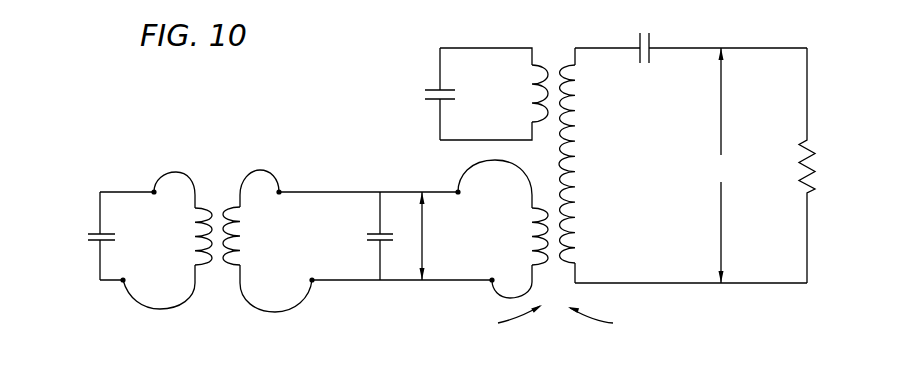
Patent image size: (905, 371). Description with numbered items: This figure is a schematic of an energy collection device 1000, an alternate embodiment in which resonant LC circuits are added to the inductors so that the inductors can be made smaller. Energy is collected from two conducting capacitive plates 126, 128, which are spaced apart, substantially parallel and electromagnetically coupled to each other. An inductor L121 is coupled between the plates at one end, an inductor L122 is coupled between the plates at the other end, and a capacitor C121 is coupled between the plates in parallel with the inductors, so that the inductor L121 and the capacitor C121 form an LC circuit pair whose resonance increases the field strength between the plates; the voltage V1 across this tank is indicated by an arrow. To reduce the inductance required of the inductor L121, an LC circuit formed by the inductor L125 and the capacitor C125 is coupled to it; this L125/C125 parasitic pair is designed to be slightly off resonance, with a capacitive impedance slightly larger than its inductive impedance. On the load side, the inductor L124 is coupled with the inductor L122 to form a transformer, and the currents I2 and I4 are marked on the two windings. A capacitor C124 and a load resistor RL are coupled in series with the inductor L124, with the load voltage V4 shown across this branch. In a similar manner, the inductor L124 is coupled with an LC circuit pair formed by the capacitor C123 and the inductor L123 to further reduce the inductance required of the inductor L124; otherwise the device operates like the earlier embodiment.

The energy collection device 1000 is at (283, 105).
The conducting capacitive plate 126 is at (335, 192).
The conducting capacitive plate 128 is at (353, 280).
The capacitor C125 is at (72, 236).
The inductor L125 is at (167, 240).
The inductor L121 is at (267, 241).
The capacitor C121 is at (352, 236).
The voltage V1 is at (423, 236).
The inductor L122 is at (501, 229).
The current I2 is at (506, 322).
The current I4 is at (604, 323).
The capacitor C123 is at (411, 94).
The inductor L123 is at (494, 94).
The inductor L124 is at (594, 165).
The capacitor C124 is at (648, 61).
The voltage V4 is at (721, 165).
The load resistor RL is at (822, 165).